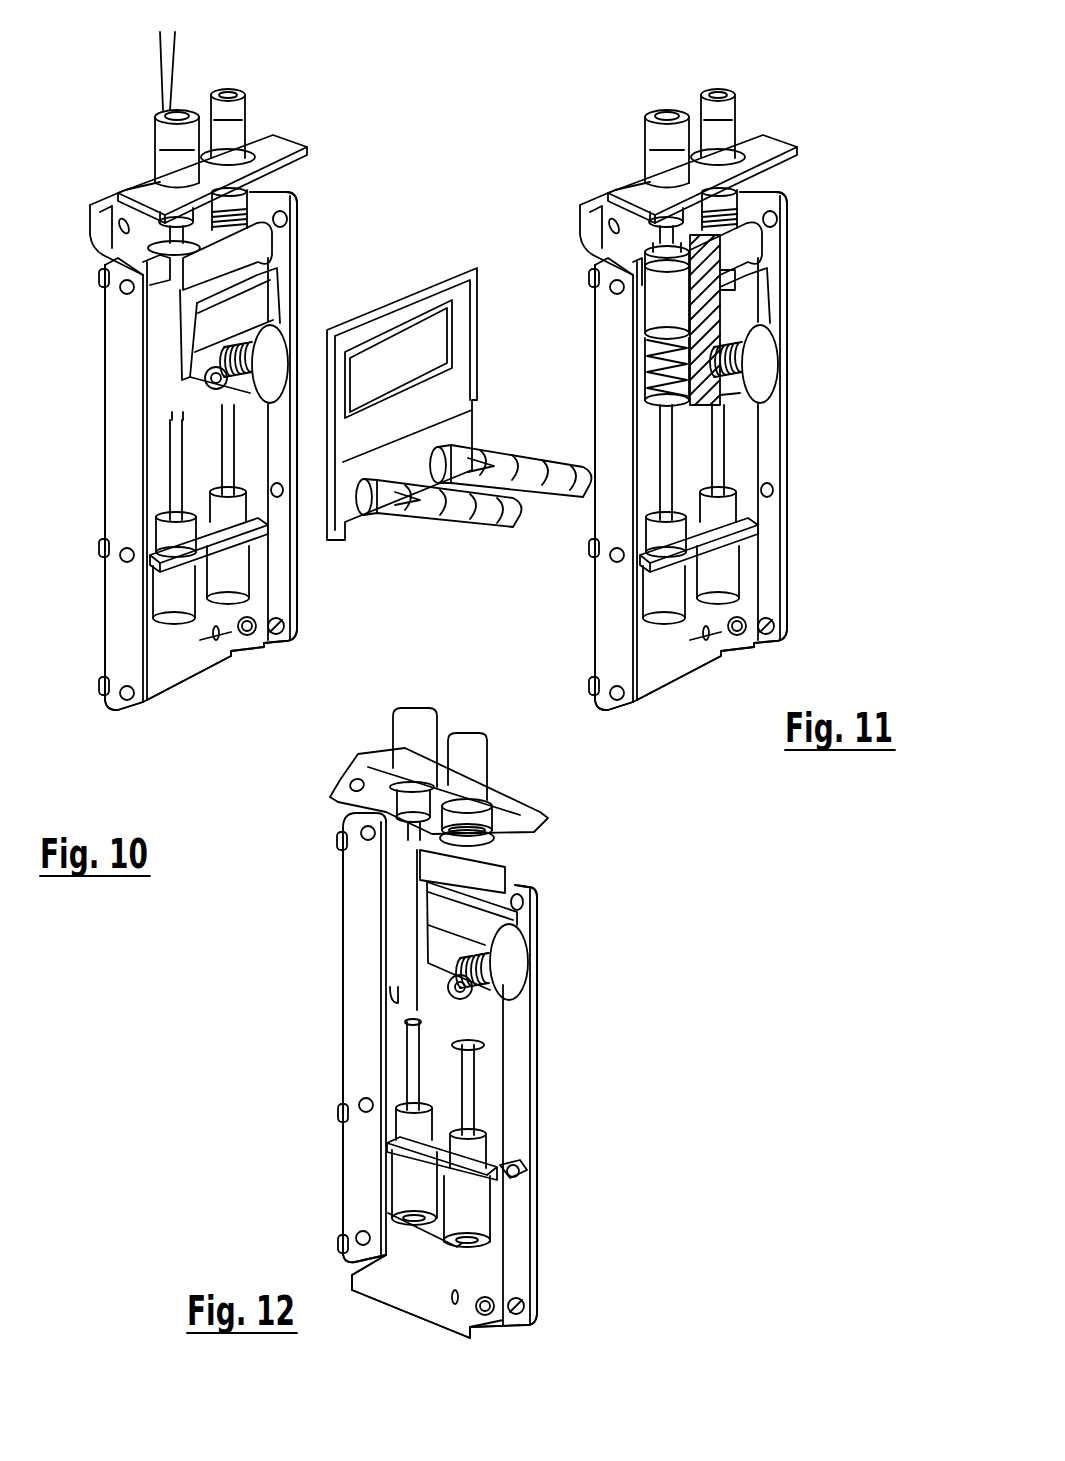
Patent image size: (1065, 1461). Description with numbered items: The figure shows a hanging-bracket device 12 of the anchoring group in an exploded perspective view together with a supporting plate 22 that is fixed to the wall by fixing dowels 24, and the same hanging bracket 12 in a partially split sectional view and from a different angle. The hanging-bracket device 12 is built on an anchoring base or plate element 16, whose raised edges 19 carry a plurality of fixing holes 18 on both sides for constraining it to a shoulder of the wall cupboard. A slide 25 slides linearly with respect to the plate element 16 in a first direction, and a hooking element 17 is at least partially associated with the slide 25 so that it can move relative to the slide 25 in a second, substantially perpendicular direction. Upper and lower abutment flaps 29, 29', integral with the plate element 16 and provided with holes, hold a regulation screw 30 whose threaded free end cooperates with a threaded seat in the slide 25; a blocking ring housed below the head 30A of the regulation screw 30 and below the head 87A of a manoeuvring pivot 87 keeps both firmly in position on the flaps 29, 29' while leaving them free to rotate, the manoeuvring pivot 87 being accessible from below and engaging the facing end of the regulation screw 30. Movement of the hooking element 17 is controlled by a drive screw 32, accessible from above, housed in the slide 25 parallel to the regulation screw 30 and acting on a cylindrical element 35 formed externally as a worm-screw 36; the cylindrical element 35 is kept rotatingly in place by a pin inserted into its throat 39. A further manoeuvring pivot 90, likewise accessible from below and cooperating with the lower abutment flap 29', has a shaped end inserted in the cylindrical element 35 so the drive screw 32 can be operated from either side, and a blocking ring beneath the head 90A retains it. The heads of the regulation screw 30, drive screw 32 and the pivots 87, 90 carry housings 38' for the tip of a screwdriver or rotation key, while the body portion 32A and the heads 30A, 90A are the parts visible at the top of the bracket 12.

In FIG. 10, the hanging-bracket device 12 is at (356, 106).
In FIG. 11, the hanging-bracket device 12 is at (648, 355).
In FIG. 12, the hanging-bracket device 12 is at (640, 1113).
In FIG. 10, the plate element 16 is at (192, 670).
In FIG. 11, the plate element 16 is at (686, 652).
In FIG. 12, the plate element 16 is at (422, 1293).
In FIG. 10, the hooking element 17 is at (285, 377).
In FIG. 11, the hooking element 17 is at (744, 364).
In FIG. 12, the hooking element 17 is at (523, 977).
In FIG. 10, the fixing holes 18 is at (122, 293).
In FIG. 11, the fixing holes 18 is at (730, 543).
In FIG. 12, the fixing holes 18 is at (362, 840).
In FIG. 10, the raised edges 19 is at (140, 400).
In FIG. 11, the raised edges 19 is at (754, 451).
In FIG. 12, the raised edges 19 is at (375, 990).
In FIG. 10, the supporting plate 22 is at (440, 273).
In FIG. 10, the fixing dowels 24 is at (516, 540).
In FIG. 10, the slide 25 is at (284, 279).
In FIG. 11, the slide 25 is at (745, 293).
In FIG. 12, the slide 25 is at (422, 926).
In FIG. 10, the upper abutment flap 29 is at (272, 195).
In FIG. 11, the upper abutment flap 29 is at (762, 189).
In FIG. 12, the upper abutment flap 29 is at (500, 800).
In FIG. 10, the lower abutment flap 29' is at (275, 514).
In FIG. 11, the lower abutment flap 29' is at (765, 530).
In FIG. 12, the lower abutment flap 29' is at (519, 1175).
In FIG. 10, the regulation screw 30 is at (255, 98).
In FIG. 11, the regulation screw 30 is at (776, 98).
In FIG. 12, the regulation screw 30 is at (473, 733).
In FIG. 10, the head of the regulation screw 30A is at (245, 118).
In FIG. 11, the head of the regulation screw 30A is at (802, 136).
In FIG. 10, the drive screw 32 is at (165, 110).
In FIG. 11, the drive screw 32 is at (695, 94).
In FIG. 12, the drive screw 32 is at (393, 733).
In FIG. 10, the terminal post body 32A is at (158, 150).
In FIG. 11, the terminal post body 32A is at (601, 132).
In FIG. 11, the cylindrical element 35 is at (596, 291).
In FIG. 11, the worm-screw 36 is at (596, 372).
In FIG. 10, the housings 38' is at (209, 55).
In FIG. 11, the throat 39 is at (596, 249).
In FIG. 11, the manoeuvring pivot 87 is at (792, 429).
In FIG. 12, the manoeuvring pivot 87 is at (470, 1120).
In FIG. 11, the head of the manoeuvring pivot 87A is at (797, 587).
In FIG. 12, the head of the manoeuvring pivot 87A is at (480, 1218).
In FIG. 11, the further manoeuvring pivot 90 is at (599, 488).
In FIG. 12, the further manoeuvring pivot 90 is at (412, 1045).
In FIG. 11, the head 90A is at (687, 665).
In FIG. 12, the head 90A is at (400, 1193).